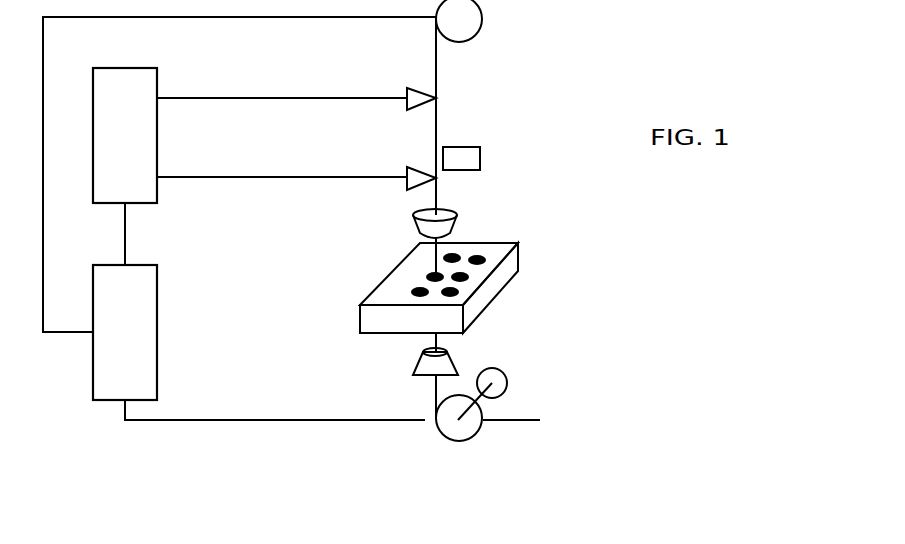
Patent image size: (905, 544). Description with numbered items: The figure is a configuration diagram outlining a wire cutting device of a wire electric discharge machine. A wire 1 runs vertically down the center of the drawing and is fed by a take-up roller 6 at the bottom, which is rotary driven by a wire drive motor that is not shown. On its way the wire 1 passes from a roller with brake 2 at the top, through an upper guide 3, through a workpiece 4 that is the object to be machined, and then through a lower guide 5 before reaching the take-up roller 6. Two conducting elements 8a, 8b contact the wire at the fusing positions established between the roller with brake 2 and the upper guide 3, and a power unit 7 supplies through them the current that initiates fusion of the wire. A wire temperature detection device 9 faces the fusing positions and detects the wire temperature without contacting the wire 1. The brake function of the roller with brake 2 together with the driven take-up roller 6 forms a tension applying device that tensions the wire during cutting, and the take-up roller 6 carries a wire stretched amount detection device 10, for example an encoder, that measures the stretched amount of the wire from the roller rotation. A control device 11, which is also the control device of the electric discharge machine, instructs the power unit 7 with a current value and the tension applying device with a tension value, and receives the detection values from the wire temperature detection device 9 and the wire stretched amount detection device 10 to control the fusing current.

The wire 1 is at (437, 125).
The roller with brake 2 is at (481, 15).
The upper guide 3 is at (457, 218).
The workpiece 4 is at (485, 275).
The lower guide 5 is at (412, 367).
The take-up roller 6 is at (465, 430).
The power unit 7 is at (122, 67).
The conducting element 8a is at (408, 91).
The conducting element 8b is at (408, 171).
The wire temperature detection device 9 is at (480, 155).
The wire stretched amount detection device 10 is at (502, 372).
The control device 11 is at (158, 332).